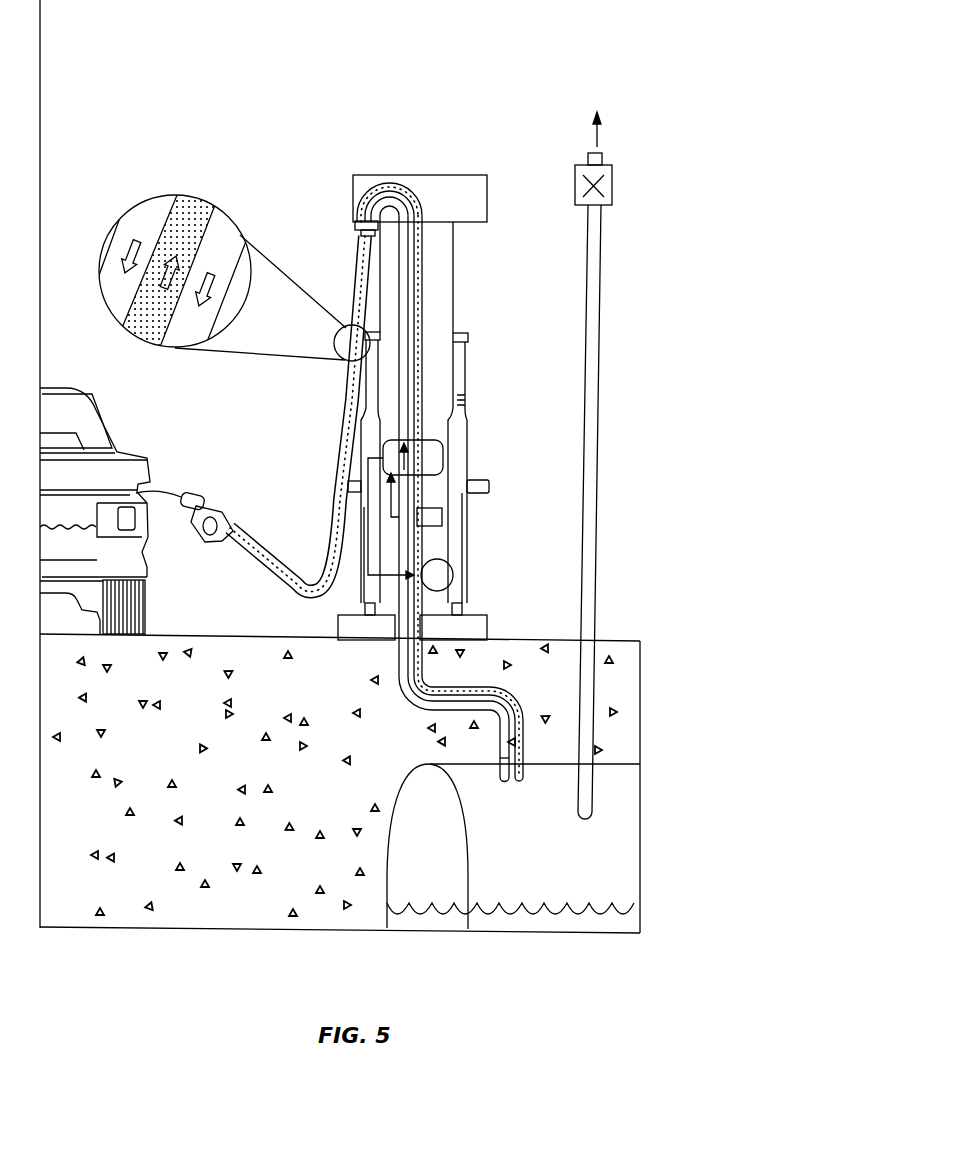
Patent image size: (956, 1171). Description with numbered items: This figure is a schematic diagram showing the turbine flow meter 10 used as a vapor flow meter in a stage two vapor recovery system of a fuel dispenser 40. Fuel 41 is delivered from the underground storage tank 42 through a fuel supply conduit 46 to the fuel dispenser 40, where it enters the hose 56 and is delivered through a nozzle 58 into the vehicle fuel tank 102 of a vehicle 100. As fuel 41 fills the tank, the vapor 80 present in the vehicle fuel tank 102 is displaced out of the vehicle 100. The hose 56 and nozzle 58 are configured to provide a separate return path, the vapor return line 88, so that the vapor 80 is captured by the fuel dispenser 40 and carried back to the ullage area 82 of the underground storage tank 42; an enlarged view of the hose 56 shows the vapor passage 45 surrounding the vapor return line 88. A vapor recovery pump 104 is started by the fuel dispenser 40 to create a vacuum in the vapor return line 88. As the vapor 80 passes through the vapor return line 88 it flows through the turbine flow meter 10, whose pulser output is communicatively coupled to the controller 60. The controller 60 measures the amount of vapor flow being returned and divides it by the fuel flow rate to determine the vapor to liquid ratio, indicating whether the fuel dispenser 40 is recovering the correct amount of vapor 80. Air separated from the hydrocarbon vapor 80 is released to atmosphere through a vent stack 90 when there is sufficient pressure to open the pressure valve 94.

The turbine flow meter 10 is at (437, 518).
The fuel dispenser 40 is at (426, 158).
The fuel 41 is at (626, 924).
The underground storage tank 42 is at (408, 784).
The annular vapor passage 45 is at (157, 213).
The fuel supply conduit 46 is at (400, 703).
The hose 56 is at (120, 217).
The nozzle 58 is at (205, 496).
The controller 60 is at (435, 453).
The vapor 80 is at (128, 327).
The ullage area 82 is at (627, 803).
The vapor return line 88 is at (213, 227).
The vent stack 90 is at (602, 312).
The pressure valve 94 is at (612, 185).
The vehicle 100 is at (84, 424).
The vehicle fuel tank 102 is at (86, 562).
The vapor recovery pump 104 is at (440, 573).